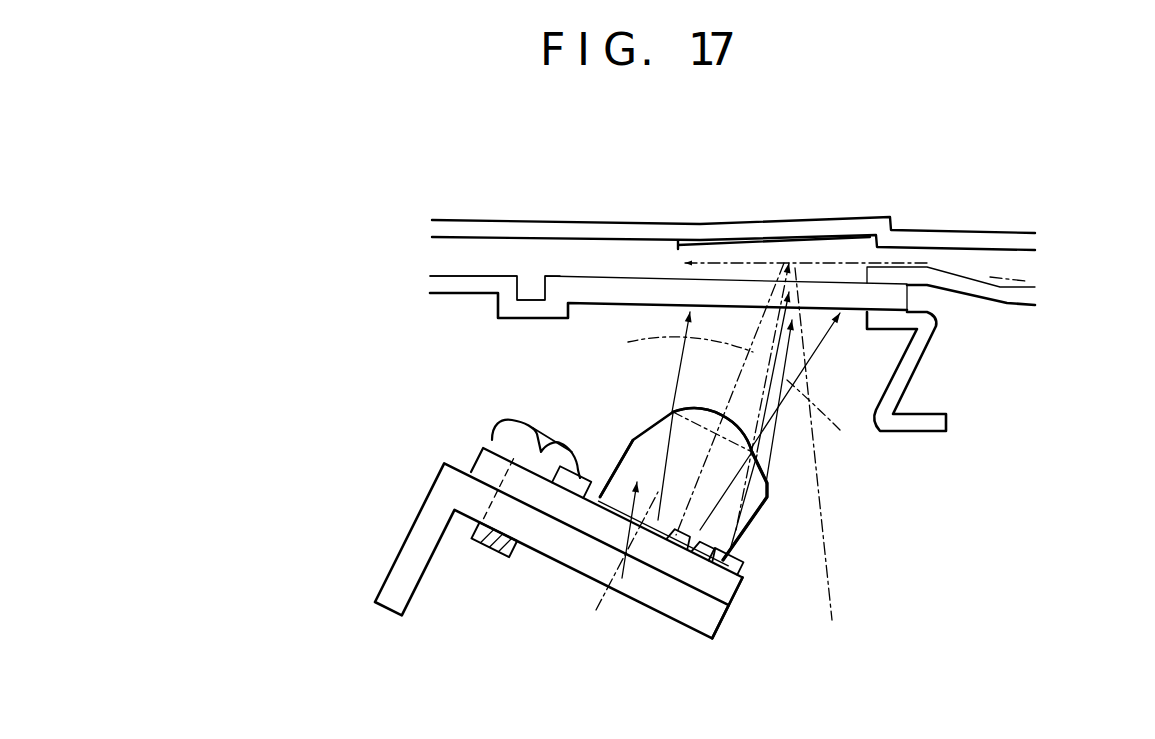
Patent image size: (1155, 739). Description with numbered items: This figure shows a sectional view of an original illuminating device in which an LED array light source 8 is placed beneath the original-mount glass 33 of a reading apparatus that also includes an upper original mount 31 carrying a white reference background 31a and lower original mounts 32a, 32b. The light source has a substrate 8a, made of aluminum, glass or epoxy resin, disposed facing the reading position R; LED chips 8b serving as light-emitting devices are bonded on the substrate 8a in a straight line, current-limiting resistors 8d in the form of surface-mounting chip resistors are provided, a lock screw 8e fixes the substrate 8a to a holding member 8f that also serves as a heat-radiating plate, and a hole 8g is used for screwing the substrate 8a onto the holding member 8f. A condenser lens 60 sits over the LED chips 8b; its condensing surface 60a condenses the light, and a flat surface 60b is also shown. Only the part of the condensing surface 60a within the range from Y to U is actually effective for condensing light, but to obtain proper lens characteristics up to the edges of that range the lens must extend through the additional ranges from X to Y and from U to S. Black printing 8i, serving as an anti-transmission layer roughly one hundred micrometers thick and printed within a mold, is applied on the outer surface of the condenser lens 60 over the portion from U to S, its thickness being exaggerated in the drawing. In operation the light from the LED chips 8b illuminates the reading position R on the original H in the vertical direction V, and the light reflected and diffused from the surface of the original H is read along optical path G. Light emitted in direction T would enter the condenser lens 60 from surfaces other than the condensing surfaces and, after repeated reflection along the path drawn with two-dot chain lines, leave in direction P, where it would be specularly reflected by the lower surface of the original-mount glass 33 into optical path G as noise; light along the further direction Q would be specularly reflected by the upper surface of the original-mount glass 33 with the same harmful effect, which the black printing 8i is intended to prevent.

The LED array light source 8 is at (423, 362).
The substrate 8a is at (733, 590).
The LED chips 8b is at (696, 540).
The current-limiting resistors 8d is at (572, 497).
The lock screw 8e is at (493, 437).
The holding member 8f is at (422, 517).
The hole for screwing substrate 8g is at (544, 490).
The black printing 8i is at (772, 488).
The upper original mount 31 is at (950, 235).
The white reference background 31a is at (855, 237).
The lower original mount 32a is at (1013, 293).
The lower original mount 32b is at (450, 284).
The original-mount glass 33 is at (613, 288).
The condenser lens 60 is at (636, 436).
The condensing surface 60a is at (707, 406).
The flat surface of condenser lens 60b is at (660, 565).
The reading position R is at (790, 263).
The original H is at (1023, 281).
The optical path G is at (837, 444).
The direction P is at (823, 415).
The direction Q is at (762, 458).
The point S is at (765, 485).
The direction T is at (626, 570).
The point U is at (749, 432).
The vertical direction V is at (680, 349).
The point X is at (636, 432).
The point Y is at (672, 410).